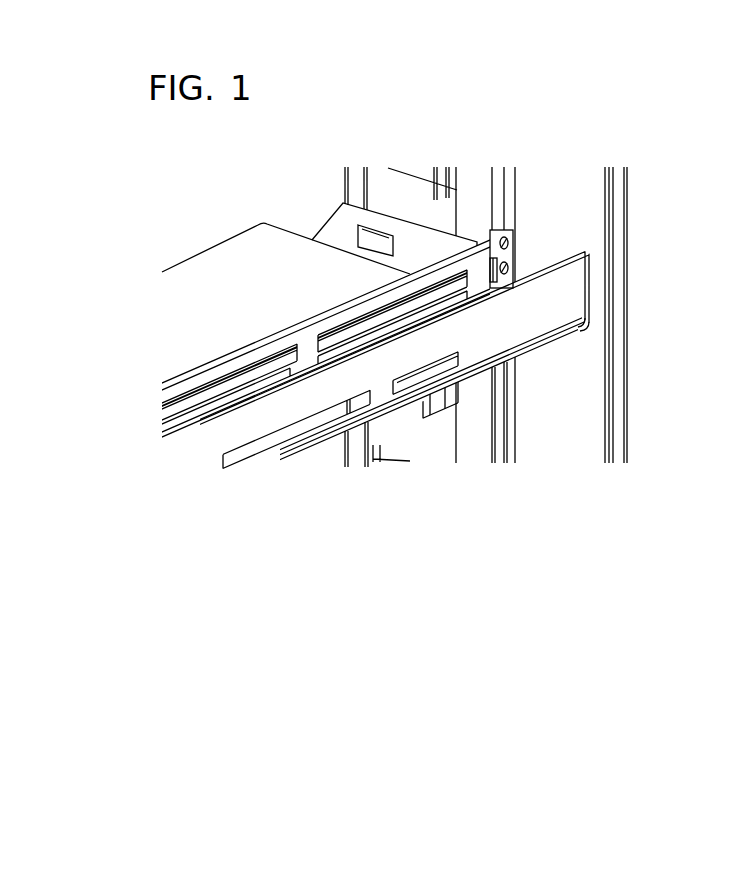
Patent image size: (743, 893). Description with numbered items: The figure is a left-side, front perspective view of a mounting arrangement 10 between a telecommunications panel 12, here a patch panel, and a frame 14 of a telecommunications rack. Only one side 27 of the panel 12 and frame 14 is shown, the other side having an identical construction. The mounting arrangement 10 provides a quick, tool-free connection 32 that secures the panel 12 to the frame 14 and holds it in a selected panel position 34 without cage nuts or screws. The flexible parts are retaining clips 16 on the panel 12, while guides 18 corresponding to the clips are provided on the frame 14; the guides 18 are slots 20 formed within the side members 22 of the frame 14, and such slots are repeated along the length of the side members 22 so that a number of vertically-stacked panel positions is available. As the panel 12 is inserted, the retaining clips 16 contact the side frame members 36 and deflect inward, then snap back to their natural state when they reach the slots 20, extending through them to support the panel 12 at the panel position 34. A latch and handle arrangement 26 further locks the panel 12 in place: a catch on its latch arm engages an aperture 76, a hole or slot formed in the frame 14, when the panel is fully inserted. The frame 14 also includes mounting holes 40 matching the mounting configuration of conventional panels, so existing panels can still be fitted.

The mounting arrangement 10 is at (326, 259).
The telecommunications panel 12 is at (202, 343).
The frame 14 is at (610, 336).
The retaining clip 16 is at (396, 236).
The guide 18 is at (436, 422).
The slot 20 is at (432, 408).
The side member 22 is at (390, 434).
The latch and handle arrangement 26 is at (565, 325).
The side 27 is at (336, 224).
The connection 32 is at (410, 203).
The panel position 34 is at (156, 432).
The side frame member 36 is at (474, 184).
The mounting hole 40 is at (492, 447).
The aperture 76 is at (493, 388).